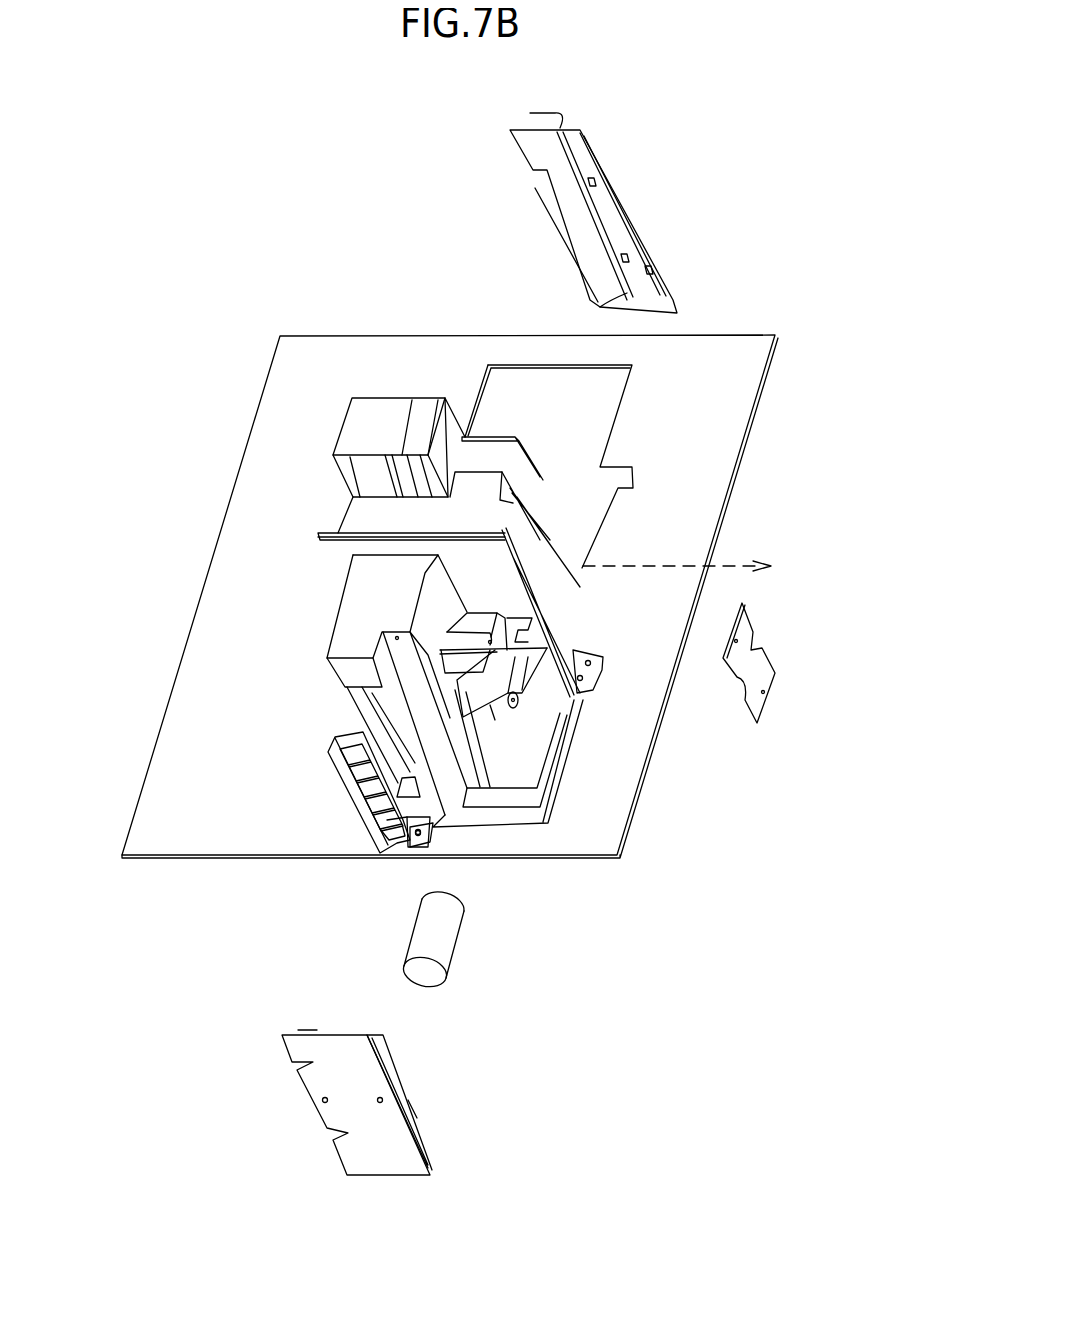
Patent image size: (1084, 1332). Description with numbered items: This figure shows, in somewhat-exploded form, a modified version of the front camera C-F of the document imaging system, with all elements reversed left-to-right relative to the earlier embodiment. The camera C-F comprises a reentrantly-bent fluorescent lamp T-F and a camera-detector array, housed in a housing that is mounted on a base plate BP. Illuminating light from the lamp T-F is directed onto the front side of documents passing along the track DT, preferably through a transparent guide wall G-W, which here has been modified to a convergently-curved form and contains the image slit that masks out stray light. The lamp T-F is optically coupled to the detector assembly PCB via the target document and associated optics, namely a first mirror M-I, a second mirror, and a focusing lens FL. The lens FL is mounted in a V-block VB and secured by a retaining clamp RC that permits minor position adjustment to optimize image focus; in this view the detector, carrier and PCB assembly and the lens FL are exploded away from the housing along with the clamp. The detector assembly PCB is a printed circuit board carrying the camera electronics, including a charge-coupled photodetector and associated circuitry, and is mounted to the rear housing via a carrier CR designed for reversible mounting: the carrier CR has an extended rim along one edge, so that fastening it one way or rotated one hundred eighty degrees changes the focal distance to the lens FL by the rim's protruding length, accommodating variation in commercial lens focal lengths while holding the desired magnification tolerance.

The base plate BP is at (153, 845).
The guide wall G-W is at (633, 247).
The fluorescent lamp T-F is at (372, 467).
The front camera C-F is at (818, 1205).
The V-block VB is at (490, 707).
The first mirror M-I is at (343, 782).
The track DT is at (692, 568).
The retaining clamp RC is at (742, 690).
The focusing lens FL is at (450, 945).
The carrier CR is at (408, 1100).
The detector assembly PCB is at (480, 1205).